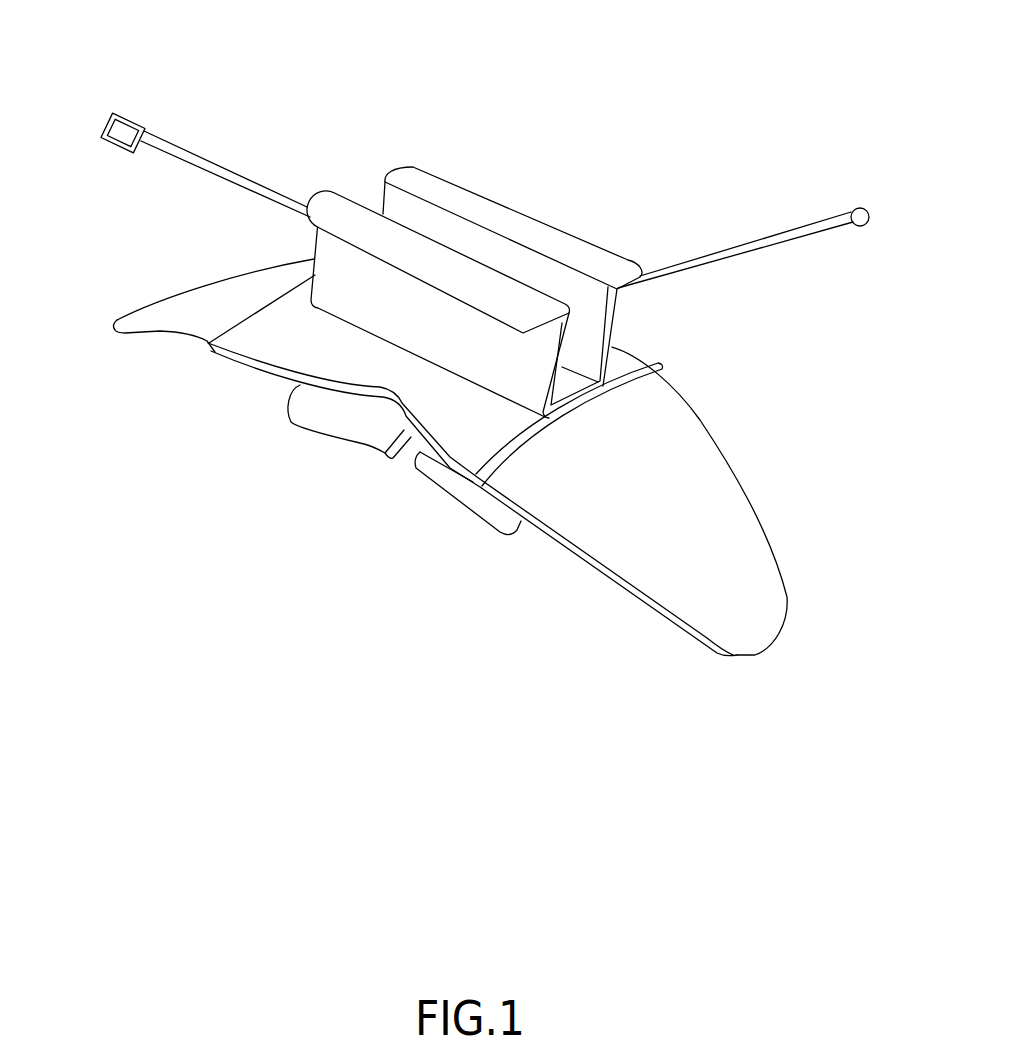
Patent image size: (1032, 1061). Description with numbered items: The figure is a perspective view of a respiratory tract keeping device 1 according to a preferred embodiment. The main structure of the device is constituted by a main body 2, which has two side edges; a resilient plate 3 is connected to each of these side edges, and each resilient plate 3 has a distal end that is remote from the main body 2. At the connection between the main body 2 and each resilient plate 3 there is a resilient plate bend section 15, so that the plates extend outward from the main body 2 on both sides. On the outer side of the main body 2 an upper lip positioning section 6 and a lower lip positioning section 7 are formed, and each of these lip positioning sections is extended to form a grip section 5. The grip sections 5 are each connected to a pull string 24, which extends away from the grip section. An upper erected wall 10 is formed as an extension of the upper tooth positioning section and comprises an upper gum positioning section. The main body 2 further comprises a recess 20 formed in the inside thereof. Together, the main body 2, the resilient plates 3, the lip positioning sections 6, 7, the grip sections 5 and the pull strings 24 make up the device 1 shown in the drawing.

The respiratory tract keeping device 1 is at (262, 241).
The main body 2 is at (410, 383).
The resilient plate 3 is at (187, 300).
The grip section 5 is at (352, 217).
The upper lip positioning section 6 is at (615, 338).
The lower lip positioning section 7 is at (524, 354).
The upper erected wall 10 is at (310, 410).
The resilient plate bend section 15 is at (243, 328).
The recess 20 is at (412, 450).
The pull string 24 is at (160, 137).